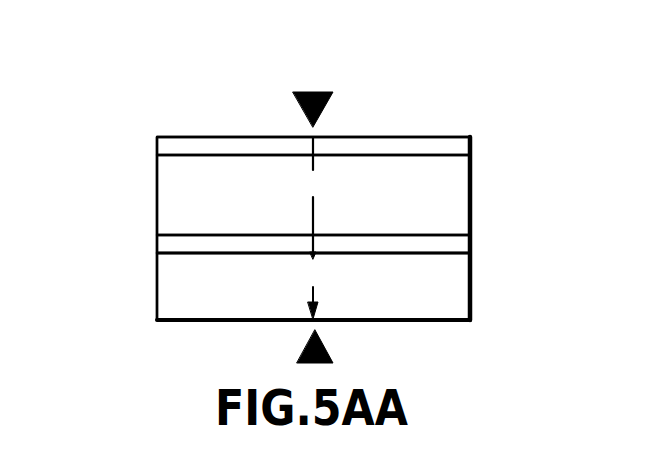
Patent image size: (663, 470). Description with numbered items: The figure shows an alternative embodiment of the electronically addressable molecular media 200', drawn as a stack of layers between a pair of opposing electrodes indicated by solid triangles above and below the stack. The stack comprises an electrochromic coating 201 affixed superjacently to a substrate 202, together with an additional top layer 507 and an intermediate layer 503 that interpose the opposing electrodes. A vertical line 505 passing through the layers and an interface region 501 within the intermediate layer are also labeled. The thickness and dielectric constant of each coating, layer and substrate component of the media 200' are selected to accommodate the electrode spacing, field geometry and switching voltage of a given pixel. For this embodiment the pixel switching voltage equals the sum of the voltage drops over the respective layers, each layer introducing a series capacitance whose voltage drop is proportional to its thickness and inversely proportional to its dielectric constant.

The electronically addressable molecular media 200' is at (296, 181).
The top layer 507 is at (472, 146).
The electrochromic coating 201 is at (472, 196).
The intermediate layer 503 is at (472, 241).
The substrate 202 is at (472, 288).
The interface 501 is at (218, 253).
The channel 505 is at (313, 197).